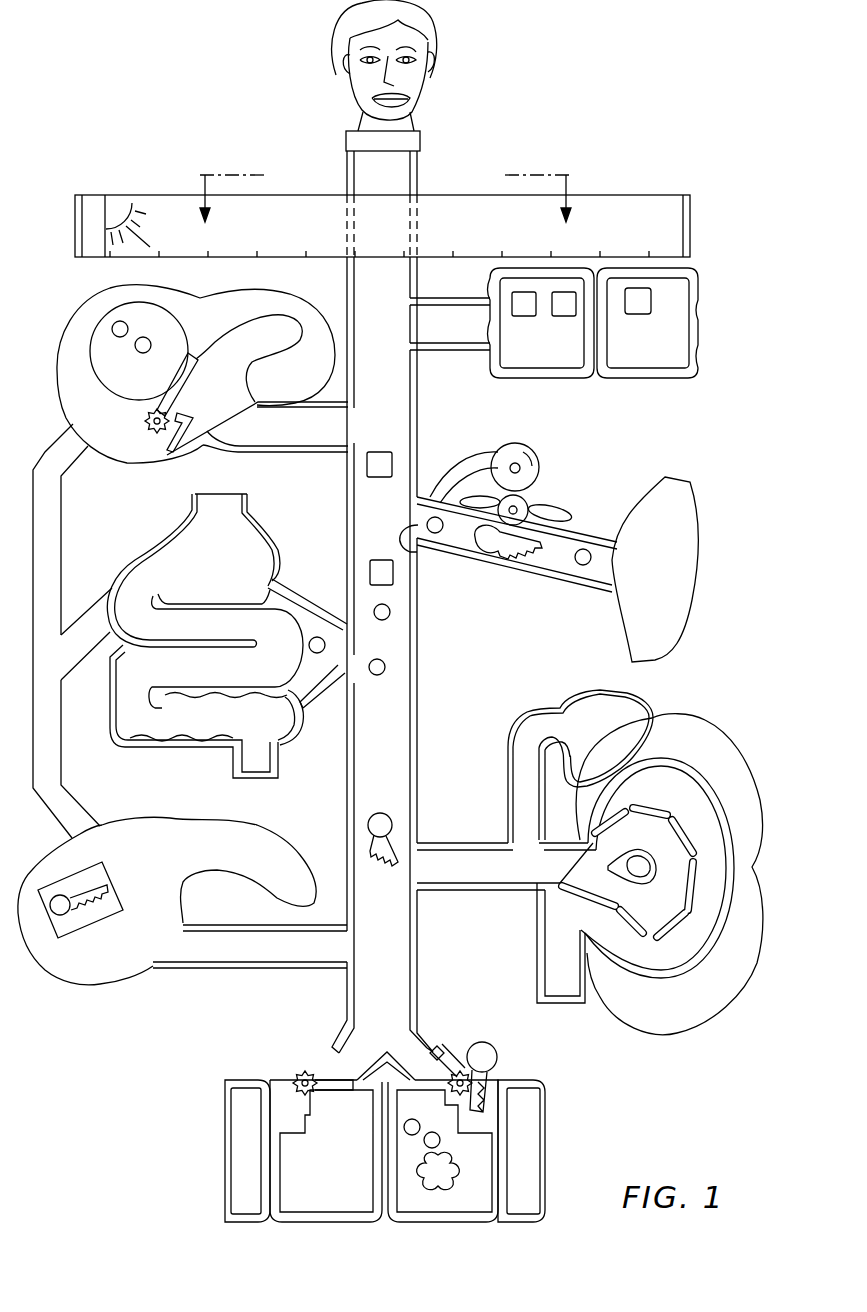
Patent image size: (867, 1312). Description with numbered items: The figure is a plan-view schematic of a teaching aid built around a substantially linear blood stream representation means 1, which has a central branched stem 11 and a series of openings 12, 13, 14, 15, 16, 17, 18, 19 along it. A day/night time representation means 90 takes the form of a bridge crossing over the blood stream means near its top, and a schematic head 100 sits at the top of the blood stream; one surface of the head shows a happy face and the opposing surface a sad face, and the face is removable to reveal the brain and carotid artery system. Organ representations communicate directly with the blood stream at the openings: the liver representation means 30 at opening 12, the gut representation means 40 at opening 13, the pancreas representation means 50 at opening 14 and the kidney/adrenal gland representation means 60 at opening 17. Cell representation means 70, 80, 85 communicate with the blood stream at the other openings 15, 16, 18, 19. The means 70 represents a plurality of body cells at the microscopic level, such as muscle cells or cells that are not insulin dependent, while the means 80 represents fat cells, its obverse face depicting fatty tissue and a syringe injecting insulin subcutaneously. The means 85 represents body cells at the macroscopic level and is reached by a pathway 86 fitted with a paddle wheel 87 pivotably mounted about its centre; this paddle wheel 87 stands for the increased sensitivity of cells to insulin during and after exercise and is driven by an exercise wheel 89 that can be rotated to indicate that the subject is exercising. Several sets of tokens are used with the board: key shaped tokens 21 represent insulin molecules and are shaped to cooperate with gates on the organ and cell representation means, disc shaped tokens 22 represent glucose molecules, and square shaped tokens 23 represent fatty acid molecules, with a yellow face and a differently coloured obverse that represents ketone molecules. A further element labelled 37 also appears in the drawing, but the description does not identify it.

The blood stream representation means 1 is at (428, 172).
The central branched stem 11 is at (350, 162).
The opening 12 is at (405, 432).
The opening 13 is at (330, 710).
The opening 14 is at (352, 963).
The opening 15 is at (335, 1075).
The opening 16 is at (432, 1075).
The opening 17 is at (415, 855).
The opening 18 is at (417, 552).
The opening 19 is at (412, 330).
The key shaped tokens 21 is at (385, 870).
The disc shaped tokens 22 is at (388, 616).
The square shaped tokens 23 is at (636, 305).
The liver representation means 30 is at (48, 378).
The side channel 37 is at (52, 535).
The gut representation means 40 is at (103, 700).
The pancreas representation means 50 is at (263, 830).
The kidney/adrenal gland representation means 60 is at (670, 985).
The cell representation means 70 is at (335, 1224).
The fat cell representation means 80 is at (631, 323).
The cell representation means 85 is at (668, 612).
The pathway 86 is at (548, 568).
The paddle wheel 87 is at (530, 505).
The exercise wheel 89 is at (537, 462).
The day/night time representation means 90 is at (683, 214).
The schematic head 100 is at (432, 78).